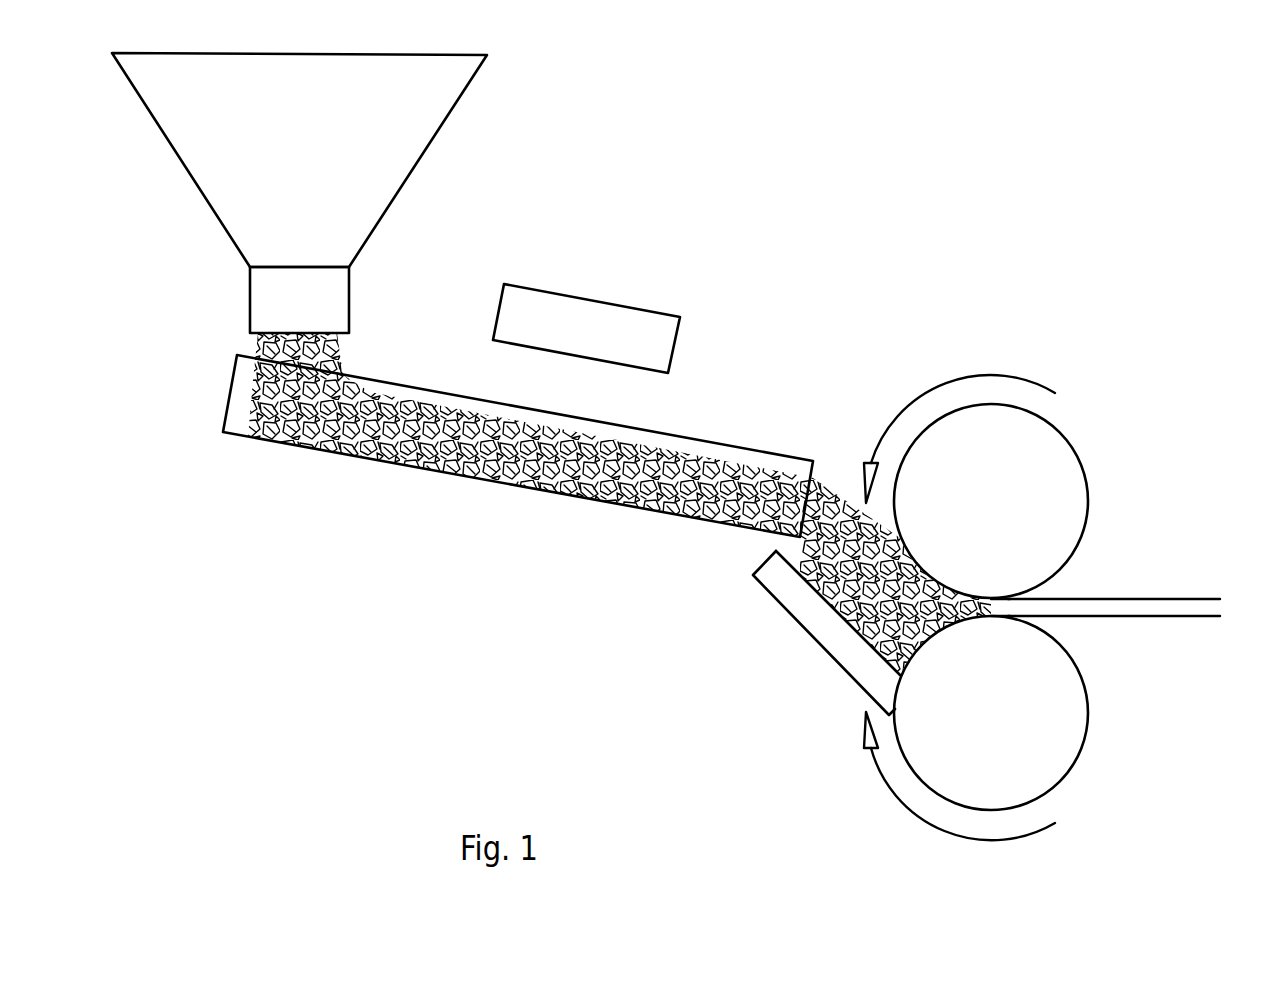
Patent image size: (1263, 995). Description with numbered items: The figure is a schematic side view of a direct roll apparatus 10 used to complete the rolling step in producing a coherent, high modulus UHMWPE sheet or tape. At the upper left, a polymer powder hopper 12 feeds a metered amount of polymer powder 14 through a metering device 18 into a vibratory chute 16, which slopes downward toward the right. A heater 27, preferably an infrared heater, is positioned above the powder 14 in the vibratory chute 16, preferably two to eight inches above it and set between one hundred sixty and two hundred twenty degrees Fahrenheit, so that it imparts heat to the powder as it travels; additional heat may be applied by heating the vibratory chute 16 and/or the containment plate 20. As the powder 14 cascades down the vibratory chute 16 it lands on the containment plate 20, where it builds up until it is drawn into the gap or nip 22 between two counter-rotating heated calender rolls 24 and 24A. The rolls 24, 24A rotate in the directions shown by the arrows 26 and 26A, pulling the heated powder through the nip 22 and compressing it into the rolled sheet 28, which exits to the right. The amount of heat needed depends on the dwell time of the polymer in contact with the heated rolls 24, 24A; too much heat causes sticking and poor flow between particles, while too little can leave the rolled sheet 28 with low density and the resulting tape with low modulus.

The direct roll apparatus 10 is at (730, 240).
The polymer powder hopper 12 is at (425, 112).
The polymer powder 14 is at (400, 417).
The vibratory chute 16 is at (237, 422).
The metering device 18 is at (267, 303).
The containment plate 20 is at (808, 616).
The gap or nip 22 is at (1000, 607).
The heated calender roll 24 is at (1005, 513).
The heated calender roll 24A is at (1020, 722).
The arrow 26 is at (928, 392).
The arrow 26A is at (977, 842).
The heater 27 is at (585, 313).
The rolled sheet 28 is at (1133, 607).